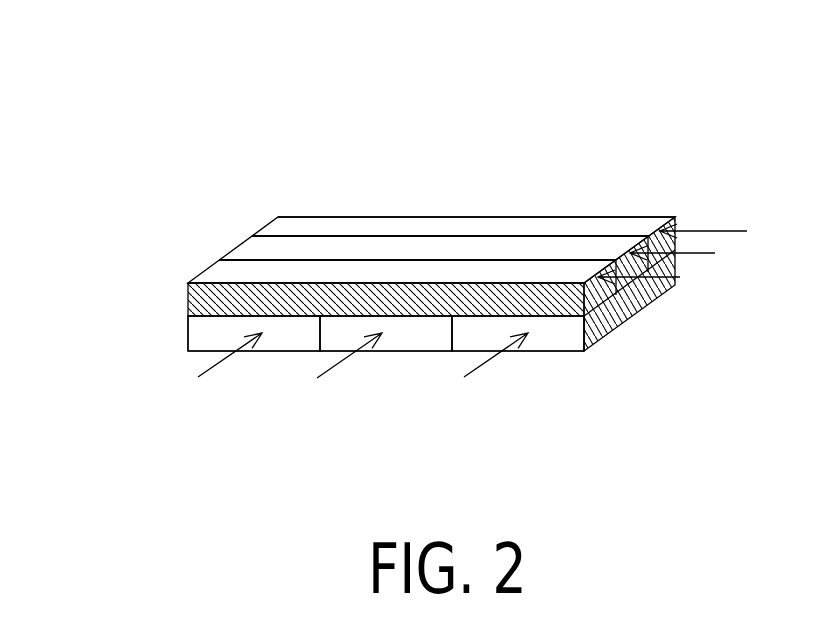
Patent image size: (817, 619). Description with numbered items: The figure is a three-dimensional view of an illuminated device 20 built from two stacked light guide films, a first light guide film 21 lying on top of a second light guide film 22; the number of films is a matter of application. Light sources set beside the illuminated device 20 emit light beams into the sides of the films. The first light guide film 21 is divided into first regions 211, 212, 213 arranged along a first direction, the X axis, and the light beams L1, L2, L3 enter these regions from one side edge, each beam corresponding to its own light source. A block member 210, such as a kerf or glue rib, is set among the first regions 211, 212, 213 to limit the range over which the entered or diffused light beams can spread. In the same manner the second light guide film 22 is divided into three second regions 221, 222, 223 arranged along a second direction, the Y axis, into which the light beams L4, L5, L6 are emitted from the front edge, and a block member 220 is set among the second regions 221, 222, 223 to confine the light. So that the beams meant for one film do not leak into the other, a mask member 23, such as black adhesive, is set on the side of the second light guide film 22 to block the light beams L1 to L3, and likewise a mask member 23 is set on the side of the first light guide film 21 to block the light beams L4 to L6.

The illuminated device 20 is at (293, 107).
The first light guide film 21 is at (188, 292).
The second light guide film 22 is at (188, 323).
The mask member 23 is at (535, 292).
The block member 210 is at (373, 259).
The first region 211 is at (287, 218).
The first region 212 is at (250, 238).
The first region 213 is at (216, 266).
The block member 220 is at (452, 333).
The second region 221 is at (210, 345).
The second region 222 is at (400, 333).
The second region 223 is at (563, 335).
The light beam L1 is at (718, 233).
The light beam L2 is at (687, 255).
The light beam L3 is at (655, 280).
The light beam L4 is at (210, 373).
The light beam L5 is at (328, 375).
The light beam L6 is at (477, 375).